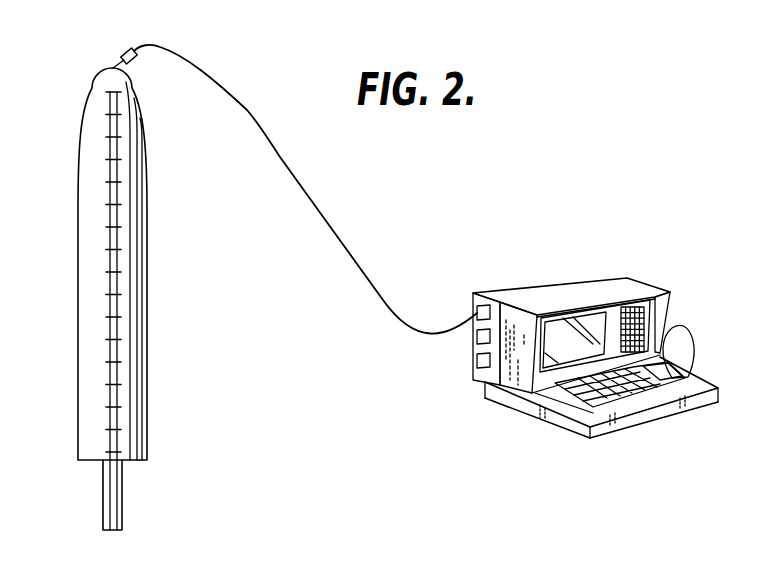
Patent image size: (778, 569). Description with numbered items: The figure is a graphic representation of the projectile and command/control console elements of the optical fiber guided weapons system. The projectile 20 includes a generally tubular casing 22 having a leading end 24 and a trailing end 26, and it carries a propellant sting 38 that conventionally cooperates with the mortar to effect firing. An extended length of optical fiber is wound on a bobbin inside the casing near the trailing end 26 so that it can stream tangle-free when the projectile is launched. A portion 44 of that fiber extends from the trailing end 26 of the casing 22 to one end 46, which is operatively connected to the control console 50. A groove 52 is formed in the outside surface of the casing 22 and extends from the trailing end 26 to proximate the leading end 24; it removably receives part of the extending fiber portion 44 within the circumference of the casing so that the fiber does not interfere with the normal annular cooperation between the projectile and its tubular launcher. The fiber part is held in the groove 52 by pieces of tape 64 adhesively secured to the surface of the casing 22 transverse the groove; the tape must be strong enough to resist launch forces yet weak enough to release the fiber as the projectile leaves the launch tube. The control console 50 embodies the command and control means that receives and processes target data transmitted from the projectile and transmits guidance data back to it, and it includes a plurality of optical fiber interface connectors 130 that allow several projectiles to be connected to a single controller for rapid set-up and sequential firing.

The projectile 20 is at (157, 314).
The casing 22 is at (147, 420).
The leading end 24 is at (107, 66).
The trailing end 26 is at (137, 463).
The propellant sting 38 is at (103, 512).
The extending fiber portion 44 is at (353, 236).
The one end of extended fiber portion 46 is at (487, 287).
The control console 50 is at (642, 433).
The groove 52 is at (100, 173).
The tape 64 is at (102, 111).
The optical fiber interface connectors 130 is at (466, 343).